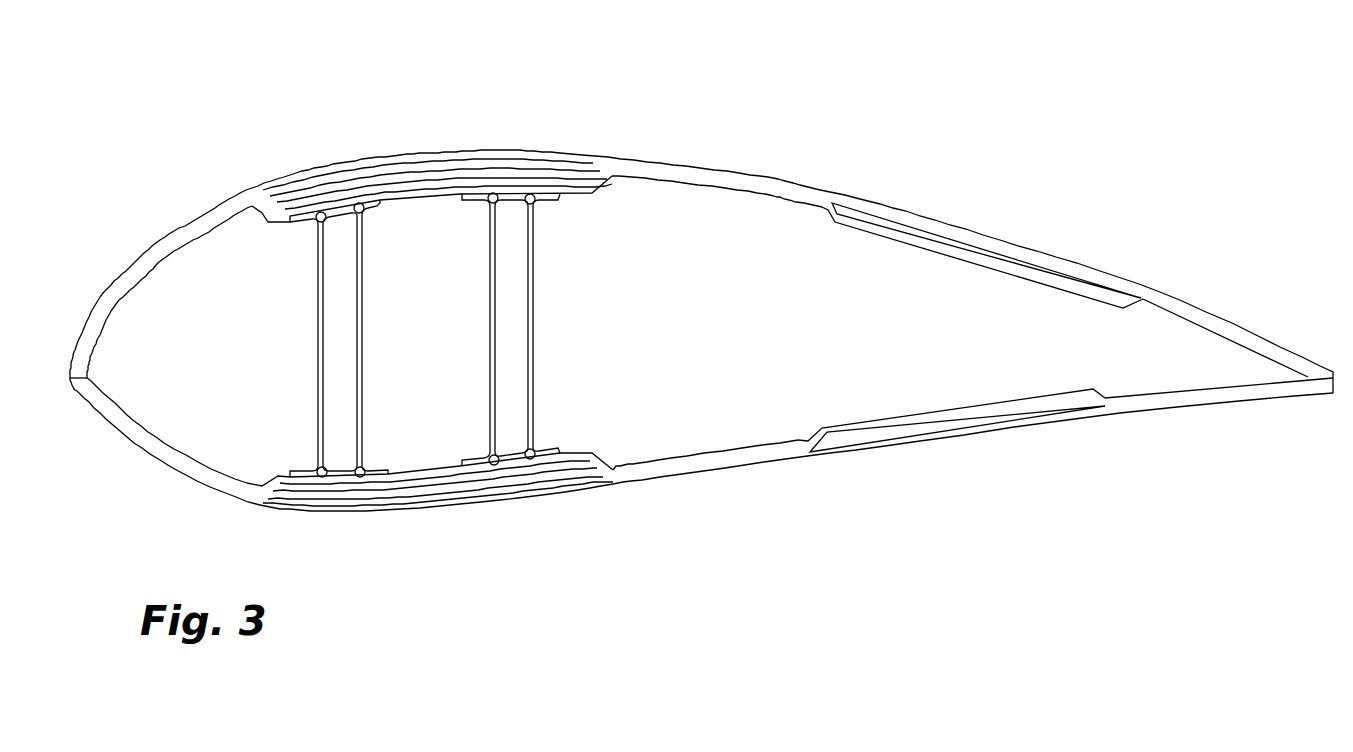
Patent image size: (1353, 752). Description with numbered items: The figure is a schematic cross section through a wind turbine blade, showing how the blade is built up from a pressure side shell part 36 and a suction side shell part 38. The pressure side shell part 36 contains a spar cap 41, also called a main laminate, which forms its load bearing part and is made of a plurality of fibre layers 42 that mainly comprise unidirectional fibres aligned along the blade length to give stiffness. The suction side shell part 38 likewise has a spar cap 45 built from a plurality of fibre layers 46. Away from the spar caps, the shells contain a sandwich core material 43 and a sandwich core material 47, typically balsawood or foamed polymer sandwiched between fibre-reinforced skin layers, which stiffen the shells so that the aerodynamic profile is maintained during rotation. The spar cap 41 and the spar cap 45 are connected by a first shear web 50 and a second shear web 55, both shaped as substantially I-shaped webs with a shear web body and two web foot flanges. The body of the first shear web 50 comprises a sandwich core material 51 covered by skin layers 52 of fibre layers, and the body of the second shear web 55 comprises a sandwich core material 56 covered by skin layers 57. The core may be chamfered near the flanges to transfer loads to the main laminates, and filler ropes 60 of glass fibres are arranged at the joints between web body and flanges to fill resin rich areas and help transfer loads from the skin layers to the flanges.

The pressure side shell part 36 is at (775, 468).
The suction side shell part 38 is at (752, 170).
The spar cap 41 is at (547, 497).
The fibre layers 42 is at (427, 503).
The sandwich core material 43 is at (975, 420).
The spar cap 45 is at (388, 160).
The fibre layers 46 is at (512, 162).
The sandwich core material 47 is at (972, 242).
The first shear web 50 is at (363, 338).
The sandwich core material 51 is at (356, 368).
The skin layers 52 is at (363, 266).
The second shear web 55 is at (547, 330).
The sandwich core material 56 is at (535, 367).
The skin layers 57 is at (540, 290).
The filler ropes 60 is at (489, 202).